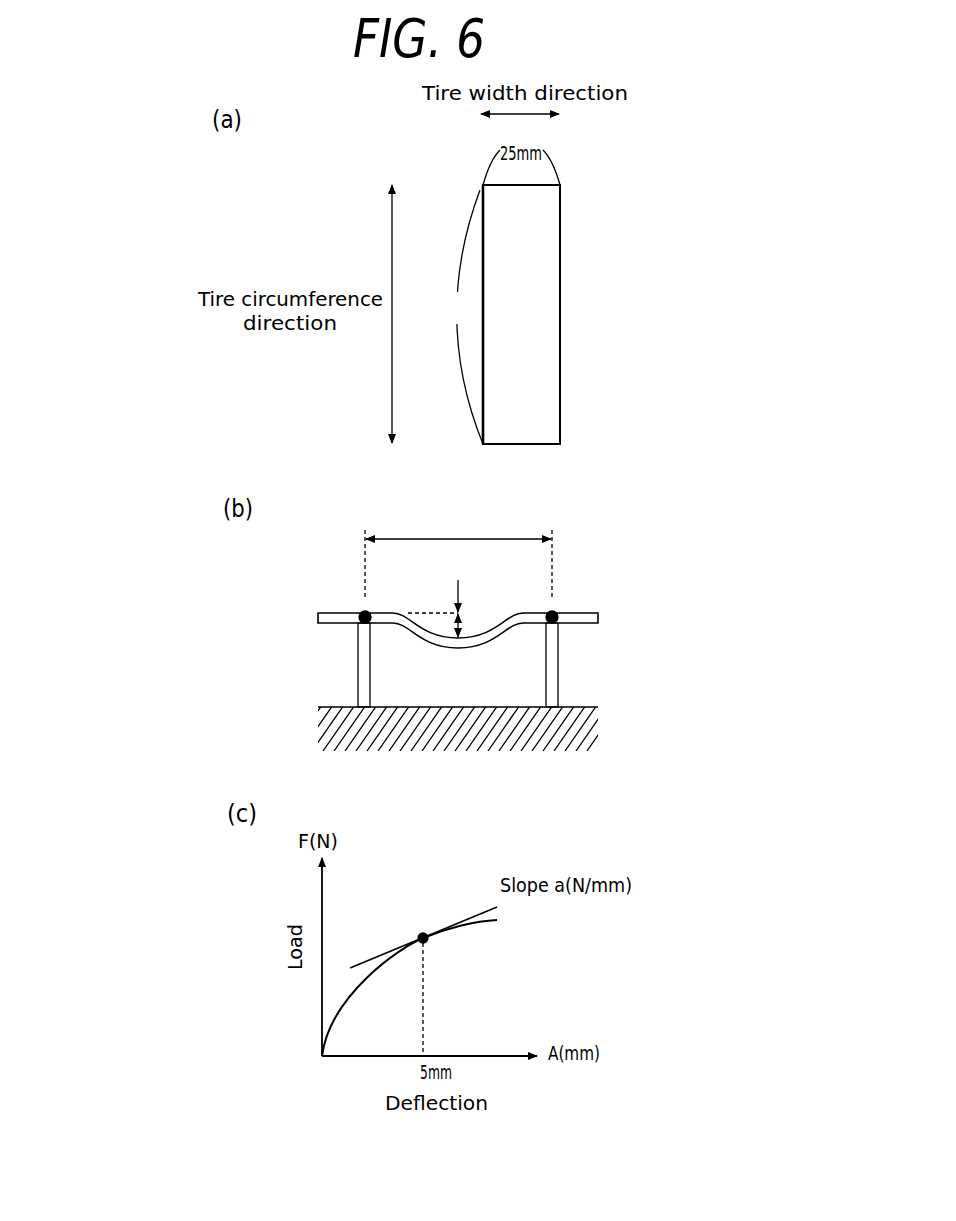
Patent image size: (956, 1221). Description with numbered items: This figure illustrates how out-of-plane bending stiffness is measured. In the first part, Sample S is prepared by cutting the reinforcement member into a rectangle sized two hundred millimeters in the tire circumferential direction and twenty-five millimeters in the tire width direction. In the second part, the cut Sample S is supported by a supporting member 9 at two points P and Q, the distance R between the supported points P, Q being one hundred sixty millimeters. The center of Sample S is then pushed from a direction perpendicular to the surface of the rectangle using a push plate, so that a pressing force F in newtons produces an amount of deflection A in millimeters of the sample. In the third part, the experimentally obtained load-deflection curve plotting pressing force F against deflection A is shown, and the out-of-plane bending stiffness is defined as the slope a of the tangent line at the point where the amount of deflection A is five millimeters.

The supporting member 9 is at (358, 666).
The sample S is at (553, 432).
The supported point P is at (358, 604).
The supported point Q is at (559, 604).
The distance between supported points R is at (458, 554).
The pressing force F is at (457, 583).
The amount of deflection A is at (442, 625).